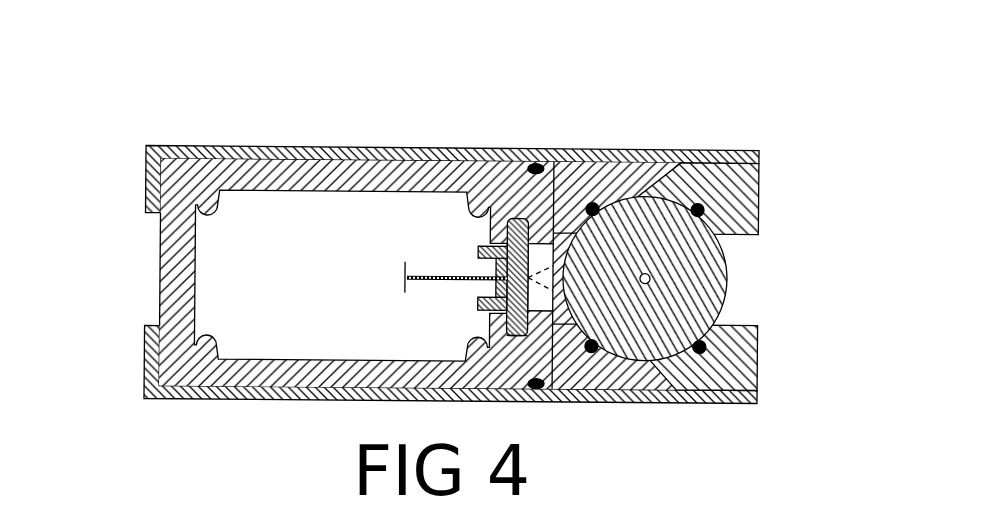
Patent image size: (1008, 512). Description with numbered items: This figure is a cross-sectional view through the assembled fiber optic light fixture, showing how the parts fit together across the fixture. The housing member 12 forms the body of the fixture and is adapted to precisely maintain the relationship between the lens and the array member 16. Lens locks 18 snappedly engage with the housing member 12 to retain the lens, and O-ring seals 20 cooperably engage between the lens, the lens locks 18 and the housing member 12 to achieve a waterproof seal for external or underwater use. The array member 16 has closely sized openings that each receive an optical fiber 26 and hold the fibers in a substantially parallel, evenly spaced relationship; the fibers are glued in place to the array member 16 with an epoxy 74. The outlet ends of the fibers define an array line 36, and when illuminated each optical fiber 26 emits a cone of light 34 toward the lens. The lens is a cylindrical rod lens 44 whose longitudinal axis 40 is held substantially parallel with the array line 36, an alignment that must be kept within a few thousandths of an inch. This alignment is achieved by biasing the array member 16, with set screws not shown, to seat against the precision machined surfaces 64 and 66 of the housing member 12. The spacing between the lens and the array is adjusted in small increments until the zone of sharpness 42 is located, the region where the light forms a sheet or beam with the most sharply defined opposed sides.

The housing member 12 is at (162, 258).
The array member 16 is at (500, 312).
The lens locks 18 is at (280, 146).
The O-ring seals 20 is at (535, 163).
The optical fiber 26 is at (403, 258).
The cone of light 34 is at (553, 242).
The array line 36 is at (548, 300).
The longitudinal axis 40 is at (640, 194).
The zone of sharpness 42 is at (650, 279).
The cylindrical rod lens 44 is at (727, 298).
The precision machined surface 64 is at (522, 316).
The precision machined surface 66 is at (518, 216).
The epoxy 74 is at (482, 249).